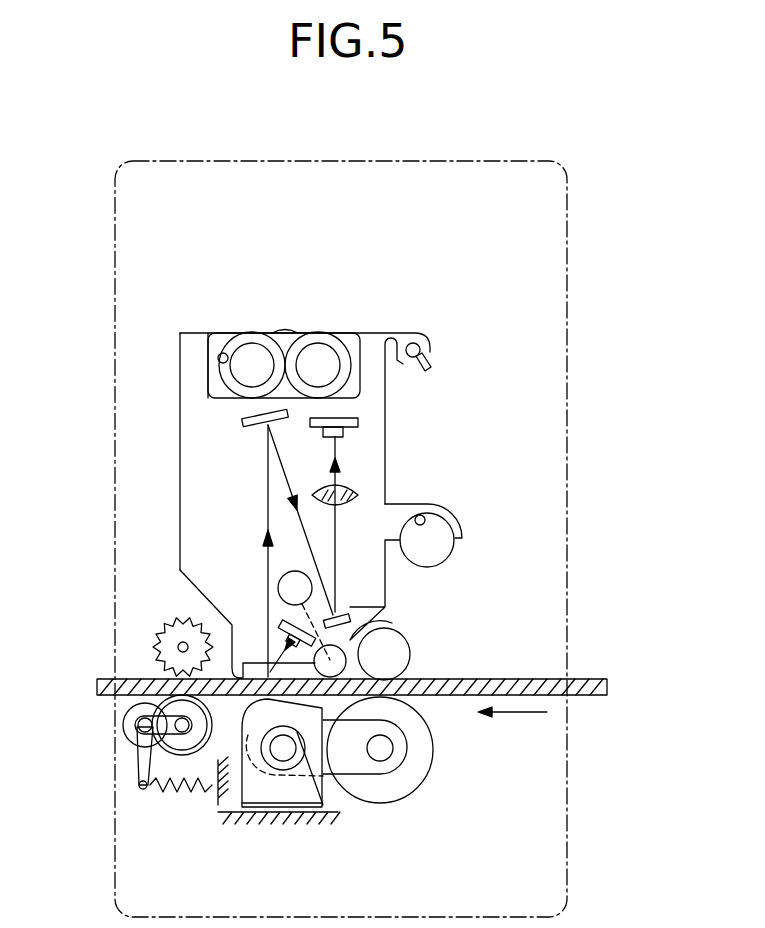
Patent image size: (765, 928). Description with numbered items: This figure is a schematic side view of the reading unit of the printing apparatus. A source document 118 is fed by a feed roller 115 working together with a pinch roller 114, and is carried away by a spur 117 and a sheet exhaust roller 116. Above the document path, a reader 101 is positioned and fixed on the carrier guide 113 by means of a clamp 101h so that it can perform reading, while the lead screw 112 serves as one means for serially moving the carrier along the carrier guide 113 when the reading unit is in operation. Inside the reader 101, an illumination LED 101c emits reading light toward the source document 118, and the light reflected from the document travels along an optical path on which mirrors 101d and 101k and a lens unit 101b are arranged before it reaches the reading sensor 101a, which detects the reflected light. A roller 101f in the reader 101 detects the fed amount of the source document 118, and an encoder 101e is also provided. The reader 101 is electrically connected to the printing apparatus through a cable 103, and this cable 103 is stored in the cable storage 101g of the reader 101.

The reader 101 is at (197, 428).
The reading sensor 101a is at (360, 424).
The lens unit 101b is at (358, 492).
The illumination LED 101c is at (290, 630).
The mirror 101d is at (342, 616).
The encoder 101e is at (280, 585).
The roller 101f is at (345, 650).
The cable storage 101g is at (190, 342).
The clamp 101h is at (430, 360).
The mirror 101k is at (255, 430).
The cable 103 is at (253, 340).
The lead screw 112 is at (440, 525).
The carrier guide 113 is at (432, 345).
The pinch roller 114 is at (390, 652).
The feed roller 115 is at (402, 788).
The sheet exhaust roller 116 is at (165, 757).
The spur 117 is at (155, 638).
The source document 118 is at (600, 678).